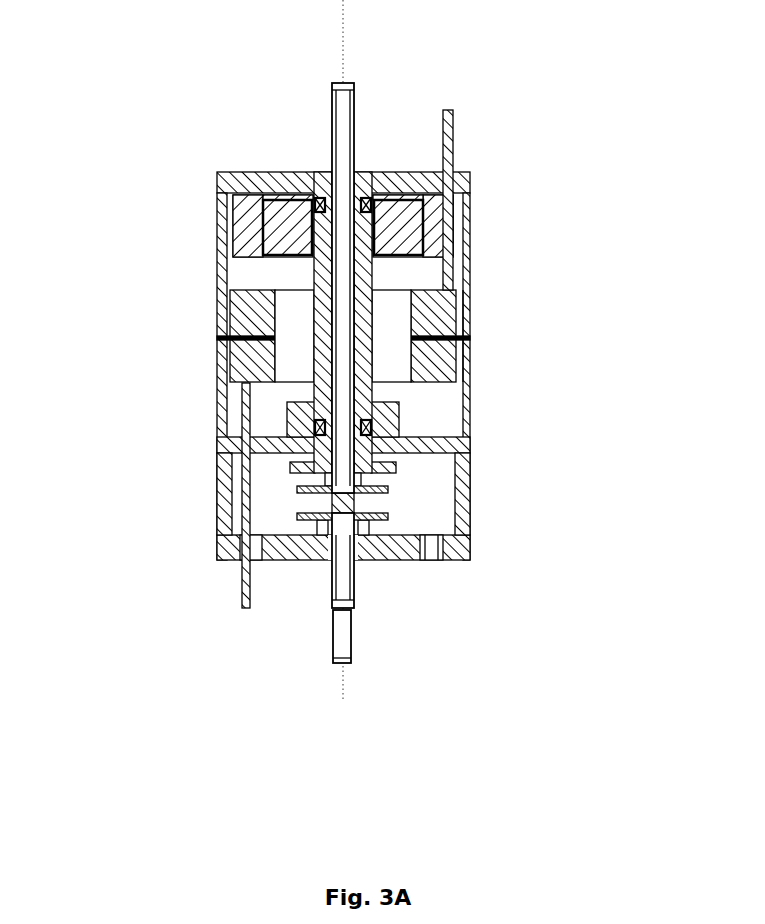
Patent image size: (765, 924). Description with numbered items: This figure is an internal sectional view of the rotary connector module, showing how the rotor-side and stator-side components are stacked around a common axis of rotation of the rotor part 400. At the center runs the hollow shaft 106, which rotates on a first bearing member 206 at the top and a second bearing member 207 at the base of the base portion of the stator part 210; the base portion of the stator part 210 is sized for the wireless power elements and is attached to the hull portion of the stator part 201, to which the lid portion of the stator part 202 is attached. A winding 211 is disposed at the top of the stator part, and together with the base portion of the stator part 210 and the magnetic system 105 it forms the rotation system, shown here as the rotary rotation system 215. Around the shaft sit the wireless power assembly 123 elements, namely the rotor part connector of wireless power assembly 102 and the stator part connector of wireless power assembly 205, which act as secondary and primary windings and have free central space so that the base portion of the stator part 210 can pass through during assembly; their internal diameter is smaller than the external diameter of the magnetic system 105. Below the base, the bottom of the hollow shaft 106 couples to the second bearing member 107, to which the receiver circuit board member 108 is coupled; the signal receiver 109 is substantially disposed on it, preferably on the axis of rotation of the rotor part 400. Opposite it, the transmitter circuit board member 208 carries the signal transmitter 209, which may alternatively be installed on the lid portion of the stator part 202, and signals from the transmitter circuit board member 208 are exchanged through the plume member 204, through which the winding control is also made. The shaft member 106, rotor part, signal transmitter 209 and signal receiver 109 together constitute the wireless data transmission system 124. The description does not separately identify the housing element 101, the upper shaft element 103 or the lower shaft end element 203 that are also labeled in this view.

The housing 101 is at (463, 182).
The rotor part connector of wireless power assembly 102 is at (438, 303).
The shaft 103 is at (333, 97).
The magnetic system 105 is at (437, 231).
The hollow shaft 106 is at (352, 170).
The second bearing member 107 is at (305, 465).
The receiver circuit board member 108 is at (347, 492).
The signal receiver 109 is at (385, 490).
The wireless power assembly 123 is at (466, 325).
The wireless data transmission system 124 is at (400, 507).
The hull portion of the stator part 201 is at (462, 447).
The lid portion of the stator part 202 is at (440, 543).
The lower shaft end 203 is at (342, 633).
The plume member 204 is at (338, 585).
The stator part connector of wireless power assembly 205 is at (435, 357).
The first bearing member 206 is at (255, 213).
The second bearing member 207 is at (313, 424).
The transmitter circuit board member 208 is at (303, 515).
The signal transmitter 209 is at (385, 517).
The base portion of the stator part 210 is at (382, 423).
The winding 211 is at (448, 210).
The rotary rotation system 215 is at (248, 200).
The axis of rotation of the rotor part 400 is at (343, 677).